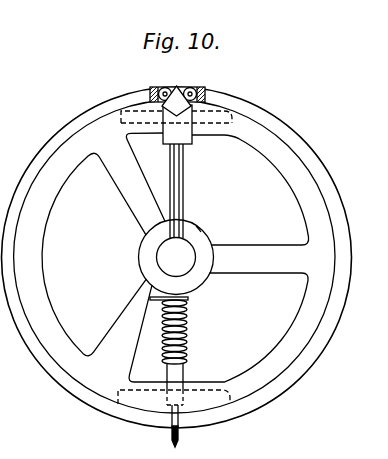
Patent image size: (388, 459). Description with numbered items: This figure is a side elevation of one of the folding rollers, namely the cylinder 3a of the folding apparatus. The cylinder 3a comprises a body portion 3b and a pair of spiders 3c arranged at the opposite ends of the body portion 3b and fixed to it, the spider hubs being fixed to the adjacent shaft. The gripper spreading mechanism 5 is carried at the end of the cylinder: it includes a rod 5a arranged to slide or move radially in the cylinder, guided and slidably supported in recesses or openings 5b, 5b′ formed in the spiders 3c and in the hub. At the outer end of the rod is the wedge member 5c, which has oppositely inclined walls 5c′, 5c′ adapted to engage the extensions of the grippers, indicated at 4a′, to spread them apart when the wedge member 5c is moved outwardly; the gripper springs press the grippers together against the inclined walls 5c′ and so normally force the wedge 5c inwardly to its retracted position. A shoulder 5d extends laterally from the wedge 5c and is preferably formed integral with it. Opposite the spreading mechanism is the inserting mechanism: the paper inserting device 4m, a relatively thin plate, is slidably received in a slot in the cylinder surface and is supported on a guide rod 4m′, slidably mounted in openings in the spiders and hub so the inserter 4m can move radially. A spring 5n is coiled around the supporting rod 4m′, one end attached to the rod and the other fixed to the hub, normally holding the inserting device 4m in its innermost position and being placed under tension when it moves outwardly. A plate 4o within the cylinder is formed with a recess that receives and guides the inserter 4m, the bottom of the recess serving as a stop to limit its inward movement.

The cylinder 3a is at (203, 287).
The body portion 3b is at (303, 150).
The spiders 3c is at (121, 178).
The bracket end blocks 4a′ is at (151, 90).
The paper inserting device 4m is at (178, 431).
The guide rods 4m′ is at (182, 384).
The plate 4o is at (224, 396).
The gripper spreading mechanism 5 is at (186, 135).
The rods 5a is at (183, 200).
The recesses or openings 5b is at (124, 122).
The recesses or openings 5b′ is at (200, 227).
The wedge member 5c is at (172, 103).
The inclined walls 5c′ is at (183, 98).
The shoulder 5d is at (214, 124).
The spring 5n is at (186, 343).